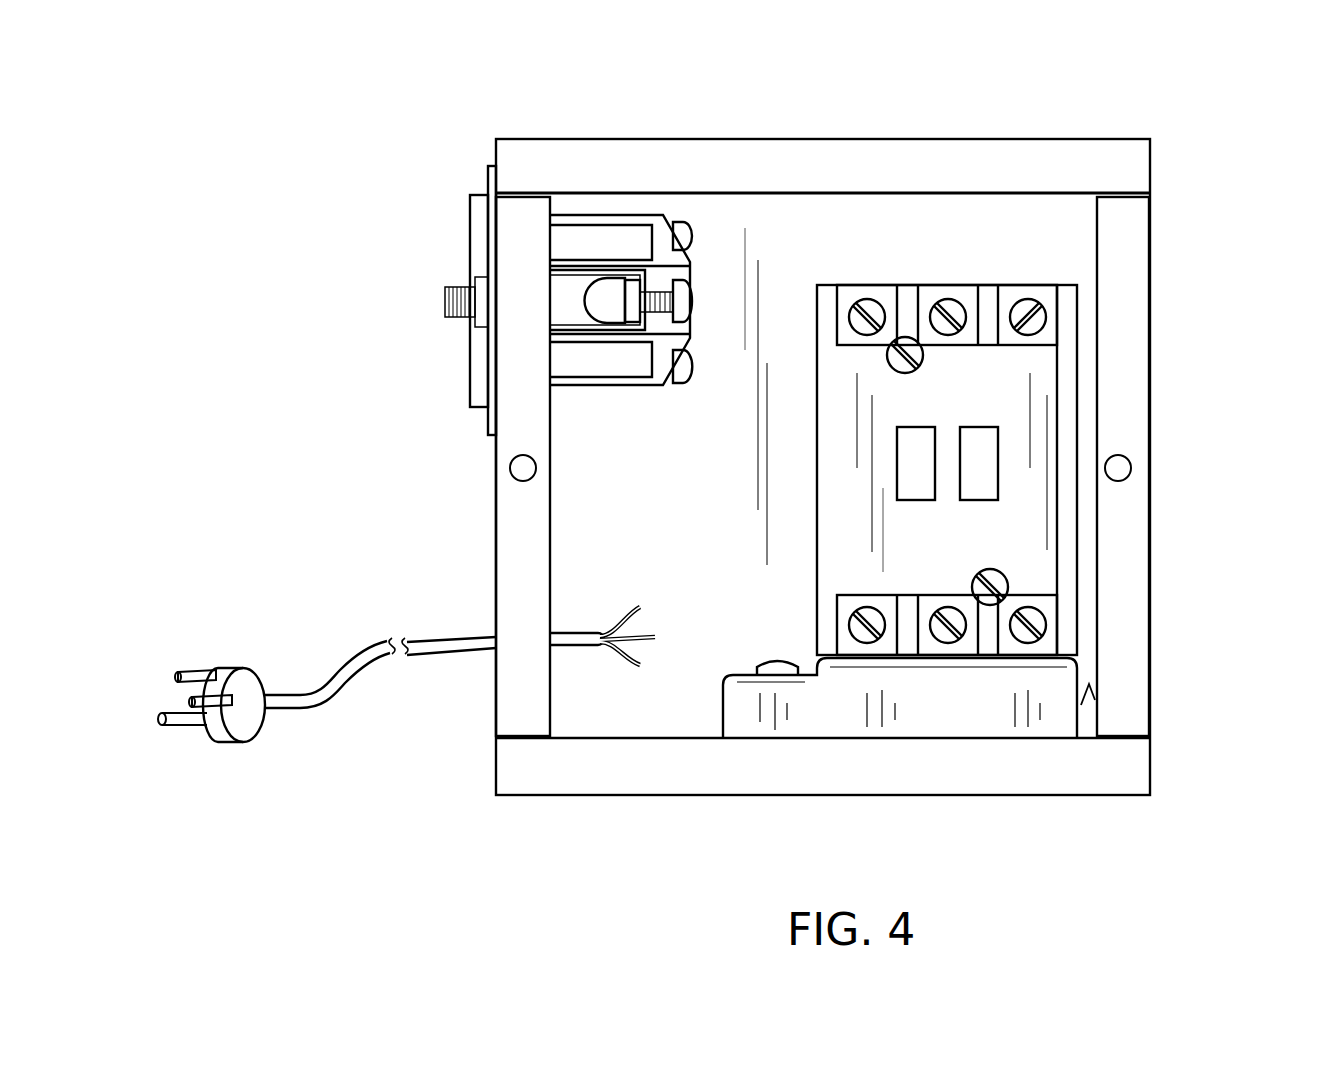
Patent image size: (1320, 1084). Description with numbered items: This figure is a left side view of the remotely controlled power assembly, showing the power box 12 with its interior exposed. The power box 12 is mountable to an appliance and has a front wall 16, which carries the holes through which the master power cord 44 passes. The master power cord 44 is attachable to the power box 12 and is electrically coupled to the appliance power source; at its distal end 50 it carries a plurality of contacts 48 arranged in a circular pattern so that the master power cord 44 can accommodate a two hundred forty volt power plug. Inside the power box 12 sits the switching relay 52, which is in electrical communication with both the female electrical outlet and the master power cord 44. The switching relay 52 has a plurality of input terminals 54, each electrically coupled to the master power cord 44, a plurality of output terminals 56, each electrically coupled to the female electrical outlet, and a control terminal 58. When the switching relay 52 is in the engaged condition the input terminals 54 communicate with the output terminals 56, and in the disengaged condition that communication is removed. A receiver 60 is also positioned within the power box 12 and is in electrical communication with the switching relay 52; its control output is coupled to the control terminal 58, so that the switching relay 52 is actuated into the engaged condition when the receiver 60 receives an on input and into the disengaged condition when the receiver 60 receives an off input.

The power box 12 is at (1141, 139).
The front wall 16 is at (495, 467).
The master power cord 44 is at (367, 663).
The contacts 48 is at (1148, 302).
The distal end 50 is at (237, 670).
The switching relay 52 is at (863, 287).
The input terminals 54 is at (1027, 302).
The output terminals 56 is at (1028, 640).
The control terminal 58 is at (978, 463).
The receiver 60 is at (858, 713).